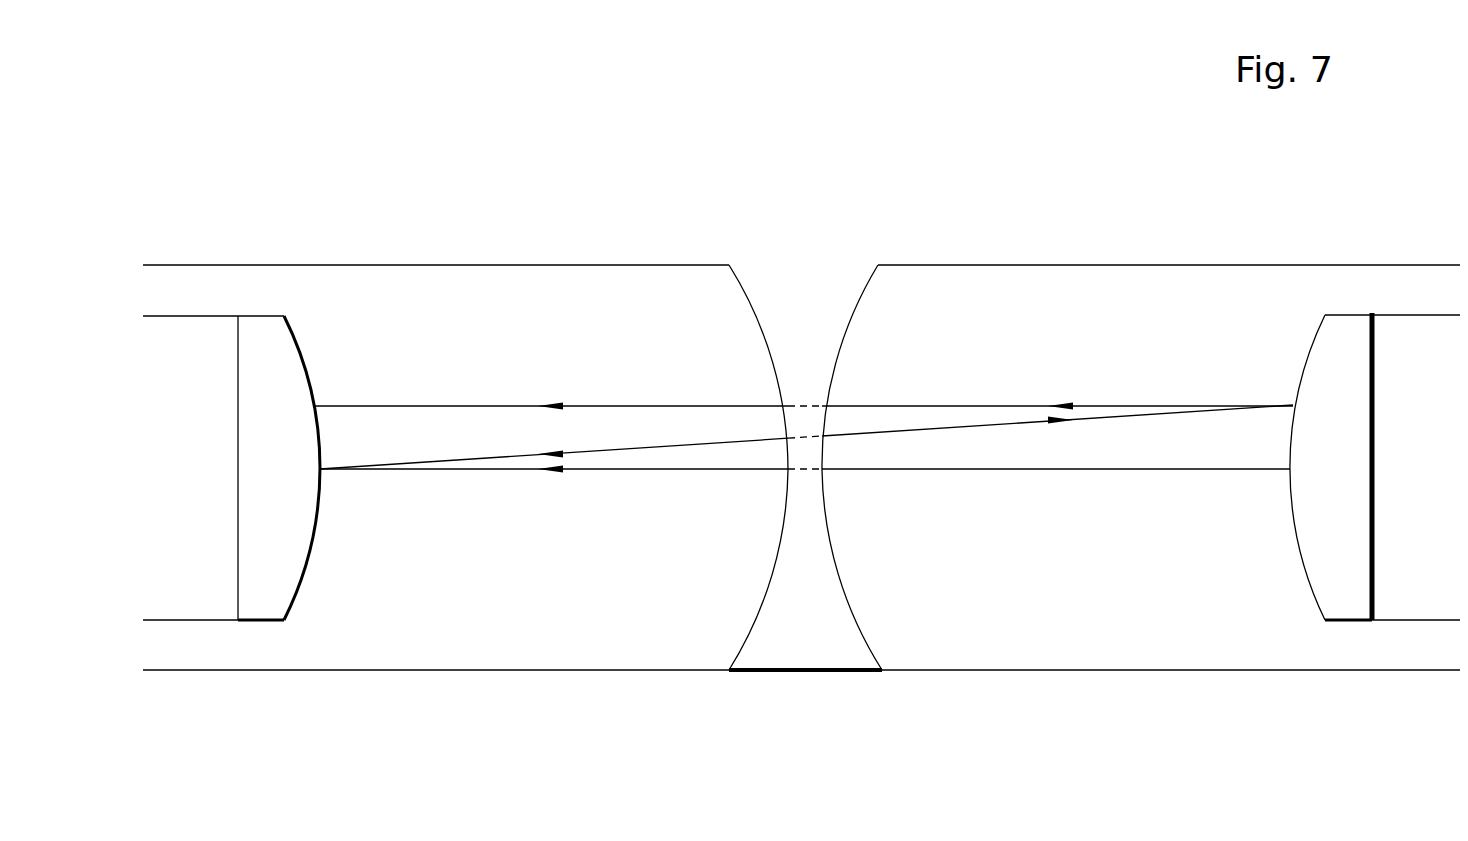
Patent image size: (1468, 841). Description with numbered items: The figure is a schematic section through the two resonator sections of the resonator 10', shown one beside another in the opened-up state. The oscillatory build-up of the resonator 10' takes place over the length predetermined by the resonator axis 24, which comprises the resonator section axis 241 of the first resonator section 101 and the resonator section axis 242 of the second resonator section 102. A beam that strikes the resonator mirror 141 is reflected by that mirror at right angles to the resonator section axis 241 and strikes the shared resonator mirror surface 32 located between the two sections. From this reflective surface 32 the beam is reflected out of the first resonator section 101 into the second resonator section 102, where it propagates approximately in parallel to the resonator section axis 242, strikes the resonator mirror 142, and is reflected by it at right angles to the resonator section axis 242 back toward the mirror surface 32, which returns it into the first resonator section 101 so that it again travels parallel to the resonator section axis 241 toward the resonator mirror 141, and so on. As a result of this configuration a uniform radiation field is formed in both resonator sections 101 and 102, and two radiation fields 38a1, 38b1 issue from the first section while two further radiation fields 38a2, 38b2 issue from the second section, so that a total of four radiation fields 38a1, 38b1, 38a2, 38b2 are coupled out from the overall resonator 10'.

The radiation field 38b1 is at (168, 283).
The radiation field 38b2 is at (1411, 283).
The radiation field 38a1 is at (167, 652).
The radiation field 38a2 is at (1428, 650).
The resonator mirror 141 is at (282, 350).
The resonator mirror 142 is at (1332, 335).
The resonator mirror surface 32 is at (856, 618).
The resonator section axis 241 is at (460, 470).
The resonator axis 24 is at (725, 470).
The resonator section axis 242 is at (1158, 469).
The first resonator section 101 is at (523, 288).
The second resonator section 102 is at (1080, 290).
The resonator 10' is at (798, 167).